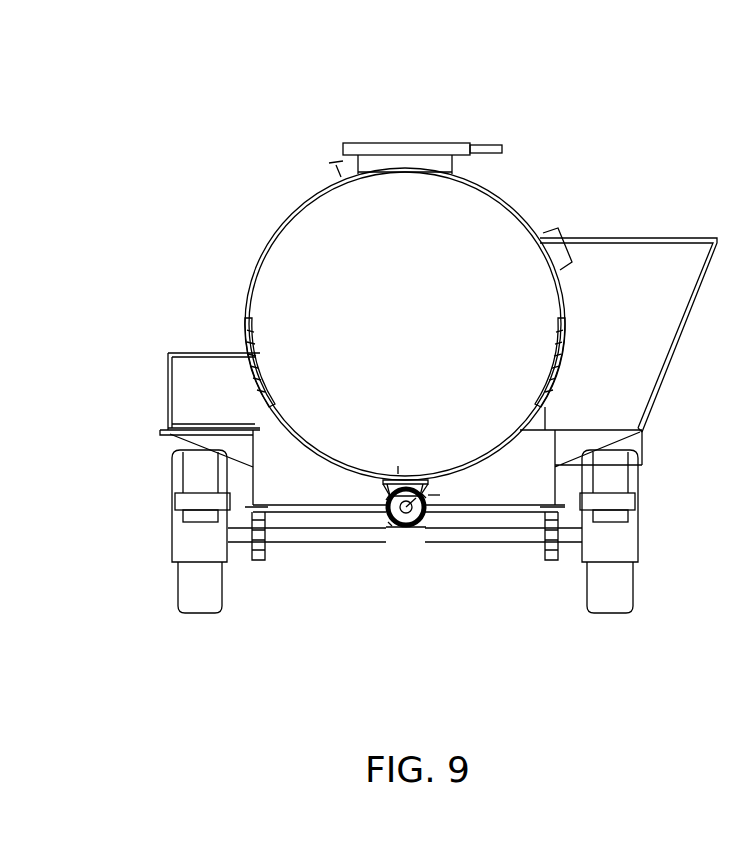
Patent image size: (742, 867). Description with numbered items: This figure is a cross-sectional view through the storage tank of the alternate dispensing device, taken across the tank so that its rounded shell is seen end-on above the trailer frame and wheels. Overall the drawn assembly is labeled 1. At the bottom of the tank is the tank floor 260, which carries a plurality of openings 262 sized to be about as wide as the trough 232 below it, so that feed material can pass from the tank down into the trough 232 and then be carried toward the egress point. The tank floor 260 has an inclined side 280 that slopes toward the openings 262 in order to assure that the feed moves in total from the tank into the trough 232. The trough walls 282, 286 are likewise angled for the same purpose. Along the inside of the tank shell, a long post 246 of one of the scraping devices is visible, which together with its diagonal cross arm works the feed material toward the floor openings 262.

The tank 1 is at (428, 143).
The long post 246 is at (238, 331).
The opening 262 is at (388, 474).
The tank floor 260 is at (419, 474).
The trough 232 is at (397, 522).
The trough wall 282 is at (372, 500).
The trough wall 286 is at (388, 530).
The inclined side 280 is at (433, 492).